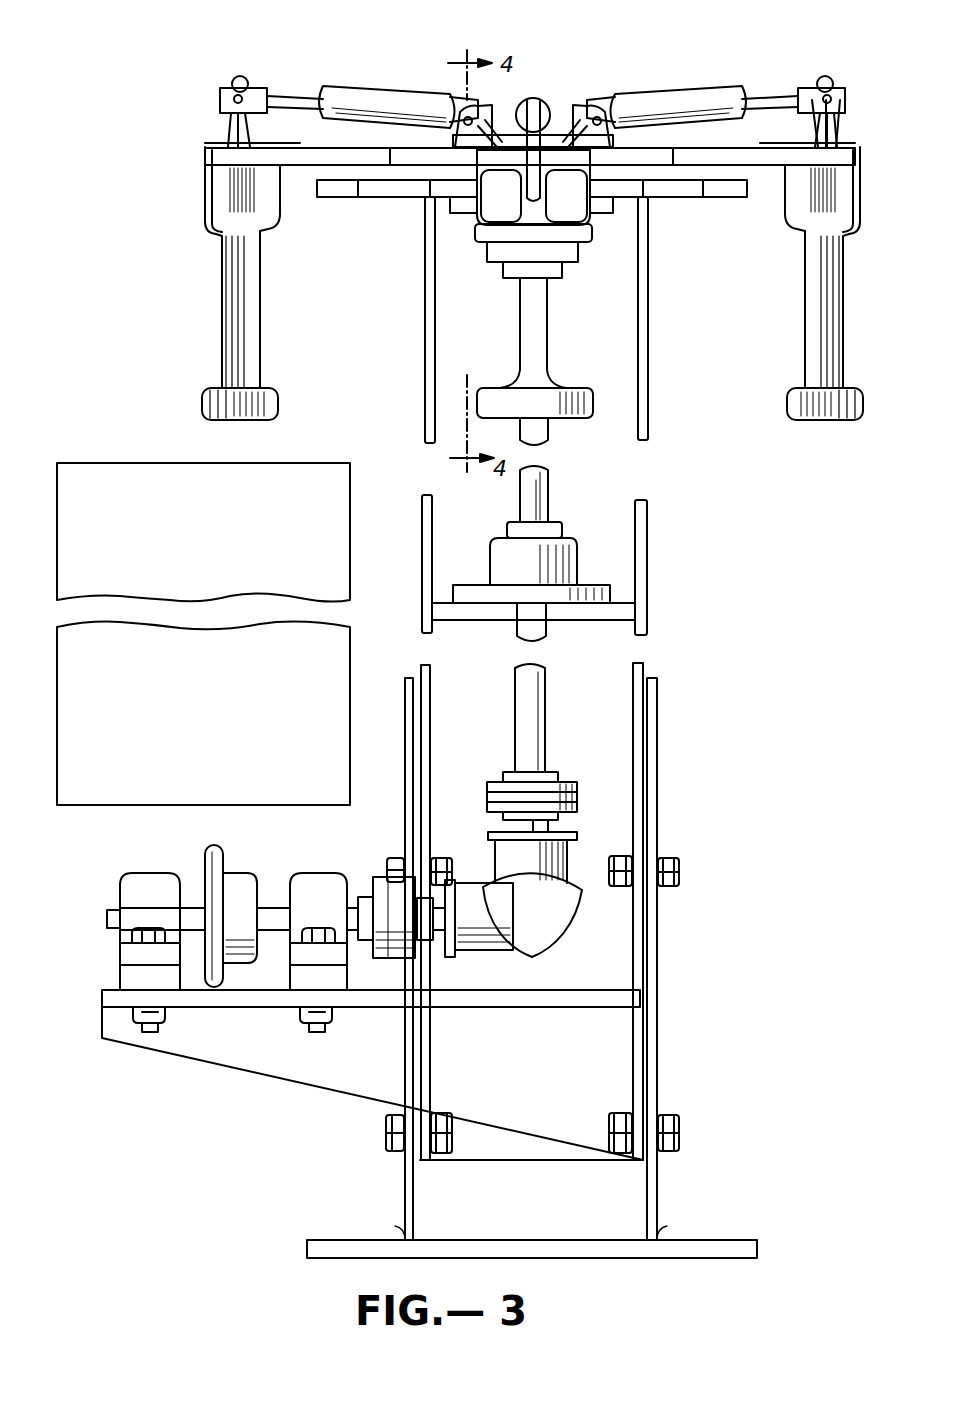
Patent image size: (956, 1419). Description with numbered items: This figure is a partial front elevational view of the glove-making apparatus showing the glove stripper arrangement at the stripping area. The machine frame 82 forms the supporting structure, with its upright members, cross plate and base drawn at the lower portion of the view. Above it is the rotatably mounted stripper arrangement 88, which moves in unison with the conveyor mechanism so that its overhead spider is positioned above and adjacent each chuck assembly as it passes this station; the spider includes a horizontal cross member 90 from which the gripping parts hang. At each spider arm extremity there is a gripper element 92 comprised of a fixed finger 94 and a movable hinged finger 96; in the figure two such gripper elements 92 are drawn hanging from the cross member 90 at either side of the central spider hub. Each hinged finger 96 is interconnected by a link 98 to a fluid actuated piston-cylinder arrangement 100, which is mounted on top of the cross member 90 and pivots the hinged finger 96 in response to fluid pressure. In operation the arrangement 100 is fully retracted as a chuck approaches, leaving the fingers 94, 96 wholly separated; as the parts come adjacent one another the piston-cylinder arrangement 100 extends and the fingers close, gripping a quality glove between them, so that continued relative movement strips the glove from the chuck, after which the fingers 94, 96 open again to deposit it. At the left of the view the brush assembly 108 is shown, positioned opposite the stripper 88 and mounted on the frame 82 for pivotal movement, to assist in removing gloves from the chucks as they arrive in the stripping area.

The machine frame 82 is at (656, 1004).
The stripper arrangement 88 is at (652, 424).
The cross bar 90 is at (710, 152).
The gripper element 92 is at (788, 252).
The fixed finger 94 is at (272, 407).
The movable hinged finger 96 is at (232, 272).
The link 98 is at (830, 120).
The fluid actuated piston-cylinder arrangement 100 is at (396, 100).
The brush assembly 108 is at (114, 449).